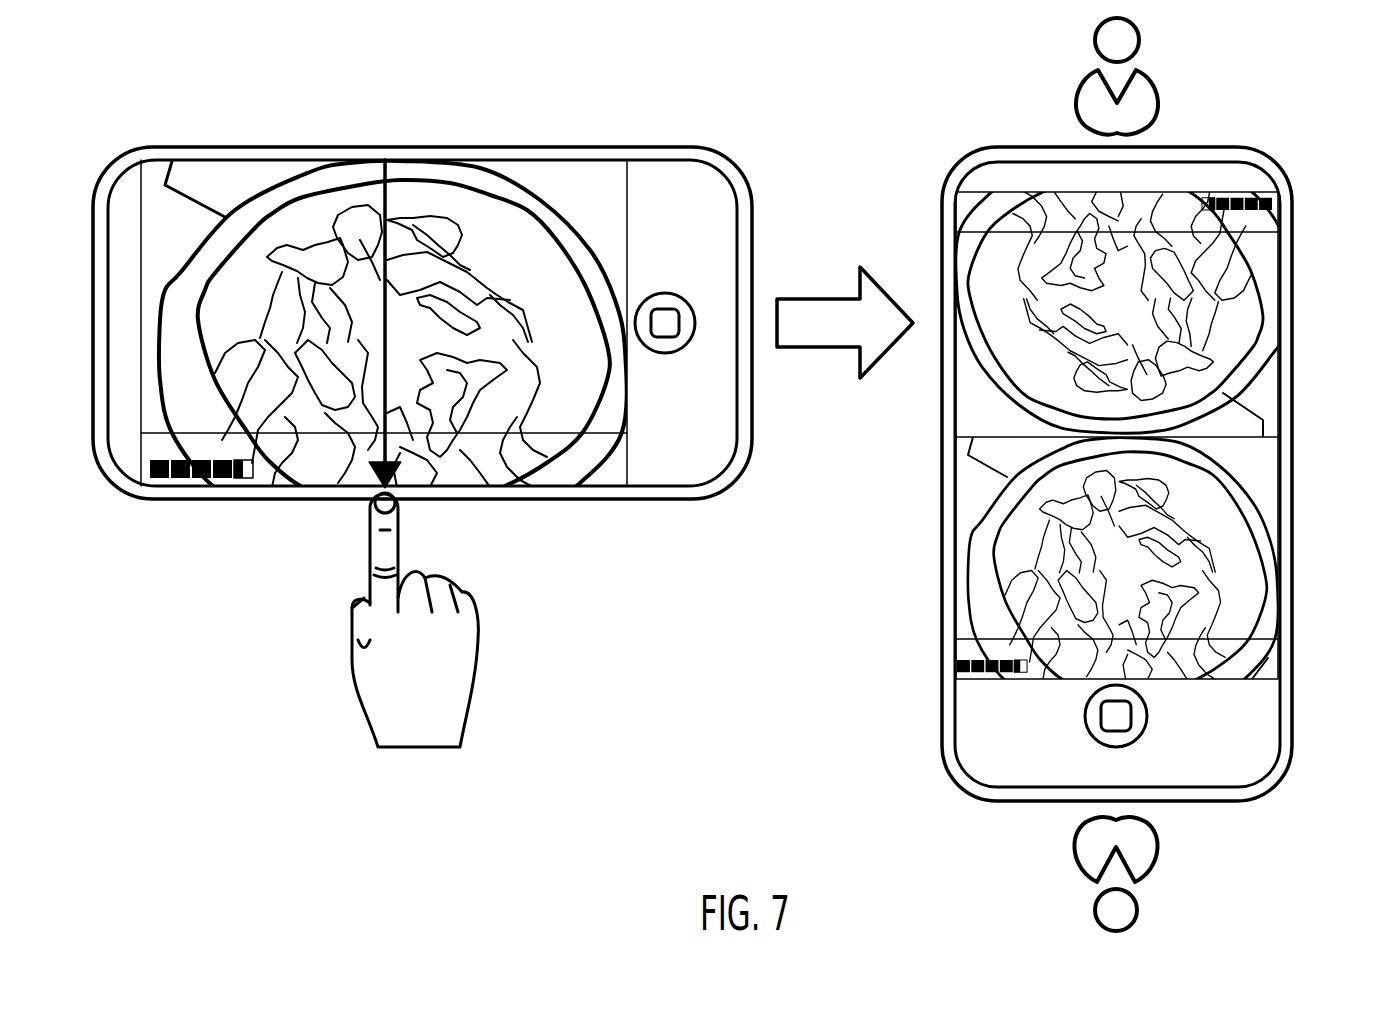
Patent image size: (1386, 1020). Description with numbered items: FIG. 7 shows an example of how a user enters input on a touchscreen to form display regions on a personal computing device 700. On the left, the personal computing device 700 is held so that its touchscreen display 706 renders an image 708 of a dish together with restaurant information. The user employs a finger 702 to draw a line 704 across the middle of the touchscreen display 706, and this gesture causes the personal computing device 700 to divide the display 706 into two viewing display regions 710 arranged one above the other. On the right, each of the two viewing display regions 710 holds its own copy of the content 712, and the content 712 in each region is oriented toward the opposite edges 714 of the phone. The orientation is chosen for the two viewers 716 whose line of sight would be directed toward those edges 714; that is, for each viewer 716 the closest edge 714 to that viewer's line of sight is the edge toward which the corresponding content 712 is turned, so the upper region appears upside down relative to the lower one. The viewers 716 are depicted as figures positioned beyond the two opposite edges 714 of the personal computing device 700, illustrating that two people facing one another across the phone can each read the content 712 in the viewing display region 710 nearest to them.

The personal computing device 700 is at (158, 147).
The finger 702 is at (378, 545).
The line 704 is at (375, 198).
The touchscreen display 706 is at (218, 188).
The image 708 is at (512, 185).
The viewing display region 710 is at (975, 488).
The content 712 is at (1210, 277).
The edge 714 is at (1003, 147).
The viewer 716 is at (1140, 40).